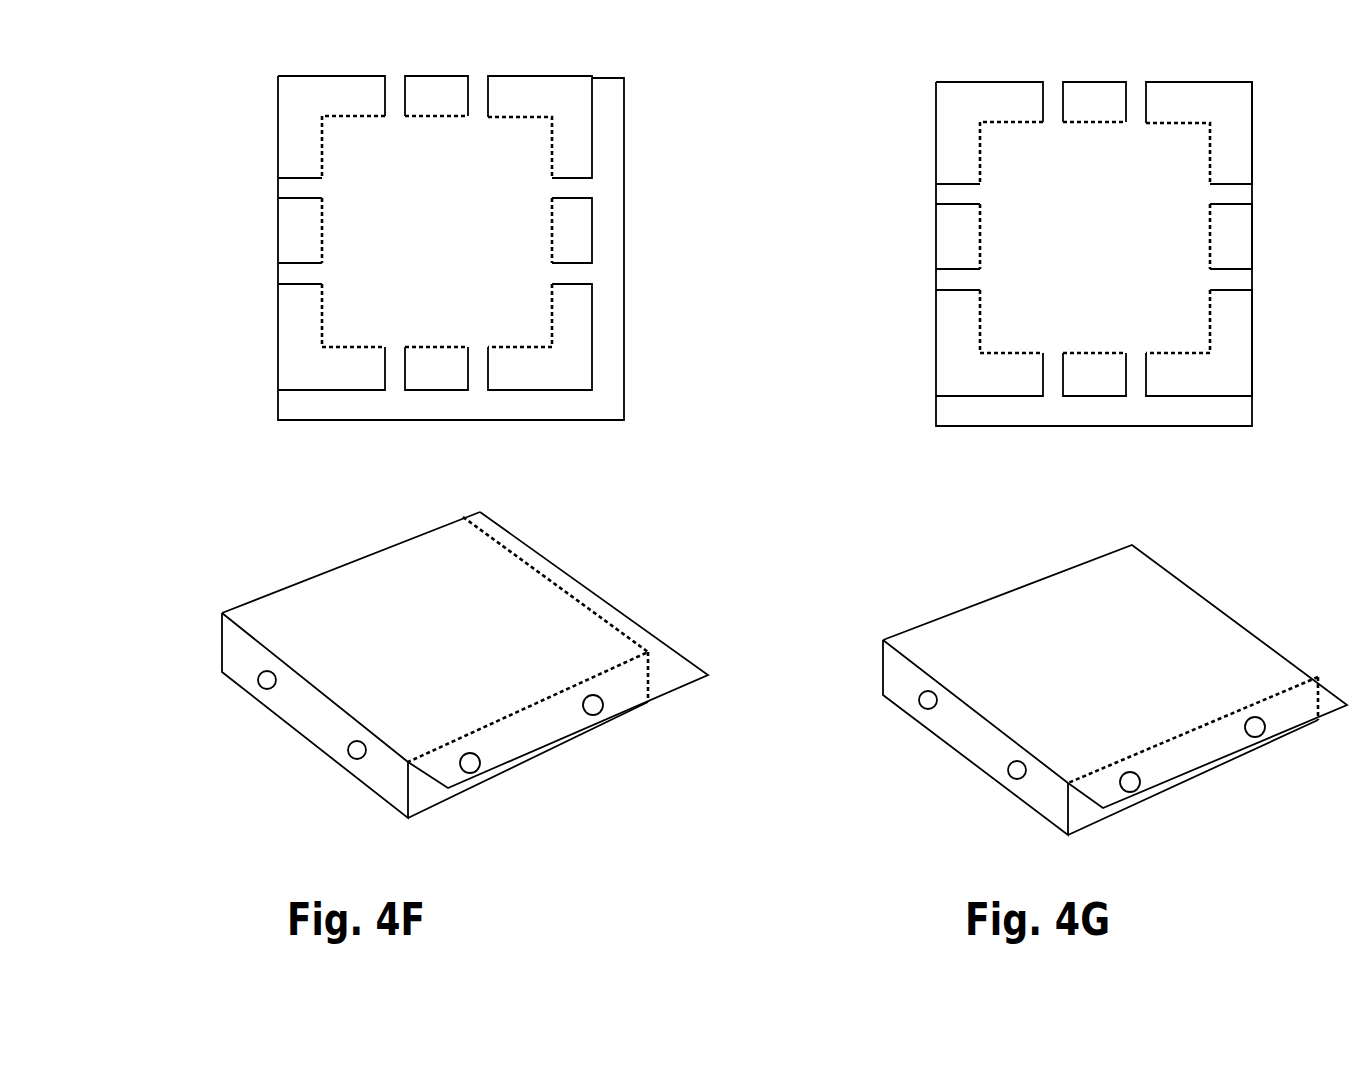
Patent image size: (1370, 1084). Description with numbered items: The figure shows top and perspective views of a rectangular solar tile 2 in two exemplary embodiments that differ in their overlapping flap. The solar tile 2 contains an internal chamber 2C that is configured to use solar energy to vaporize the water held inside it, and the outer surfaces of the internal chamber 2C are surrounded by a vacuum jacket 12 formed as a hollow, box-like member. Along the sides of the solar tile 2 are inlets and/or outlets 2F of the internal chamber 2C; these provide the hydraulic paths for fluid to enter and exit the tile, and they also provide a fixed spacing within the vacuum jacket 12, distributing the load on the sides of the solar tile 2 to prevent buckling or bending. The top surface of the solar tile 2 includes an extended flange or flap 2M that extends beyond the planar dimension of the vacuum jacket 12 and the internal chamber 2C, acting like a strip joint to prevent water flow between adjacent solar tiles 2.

In FIG. 4F, the solar tile 2 is at (277, 115).
In FIG. 4G, the solar tile 2 is at (1332, 697).
In FIG. 4F, the internal chamber 2C is at (368, 300).
In FIG. 4G, the internal chamber 2C is at (1035, 166).
In FIG. 4F, the inlets and/or outlets 2F is at (280, 273).
In FIG. 4G, the inlets and/or outlets 2F is at (1053, 372).
In FIG. 4F, the extended flange or flap 2M is at (663, 658).
In FIG. 4G, the vacuum jacket 12 is at (1228, 353).